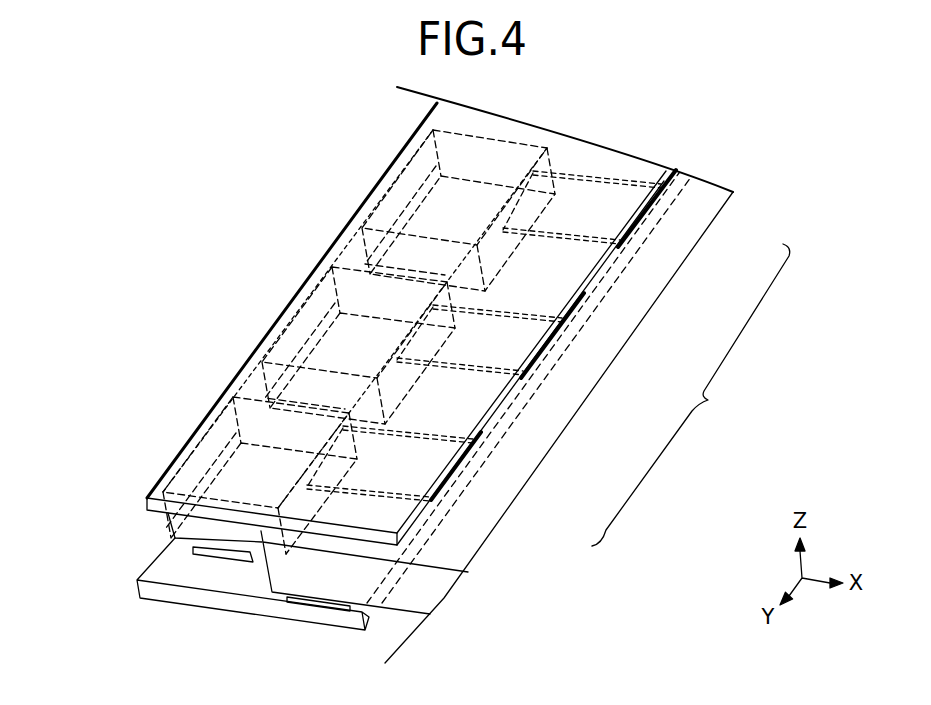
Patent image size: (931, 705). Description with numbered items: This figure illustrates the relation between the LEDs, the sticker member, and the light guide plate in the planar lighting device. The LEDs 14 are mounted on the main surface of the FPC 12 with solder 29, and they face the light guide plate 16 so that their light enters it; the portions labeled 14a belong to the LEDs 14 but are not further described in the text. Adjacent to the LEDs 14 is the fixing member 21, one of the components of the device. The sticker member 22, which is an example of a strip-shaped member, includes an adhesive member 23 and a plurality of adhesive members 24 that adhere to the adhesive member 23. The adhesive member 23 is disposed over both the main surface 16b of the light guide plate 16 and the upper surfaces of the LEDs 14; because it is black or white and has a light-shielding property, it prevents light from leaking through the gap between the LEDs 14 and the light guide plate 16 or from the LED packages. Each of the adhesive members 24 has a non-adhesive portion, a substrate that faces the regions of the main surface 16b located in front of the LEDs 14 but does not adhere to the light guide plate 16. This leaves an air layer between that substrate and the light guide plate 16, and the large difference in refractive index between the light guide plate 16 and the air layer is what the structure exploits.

The FPC 12 is at (261, 608).
The LEDs 14 is at (353, 237).
The electrode of piezoelectric element 14a is at (517, 195).
The light guide plate 16 is at (425, 598).
The main surface 16b is at (465, 547).
The fixing member 21 is at (322, 604).
The sticker member 22 is at (691, 395).
The adhesive member 23 is at (483, 410).
The adhesive members 24 is at (637, 228).
The solder 29 is at (223, 555).